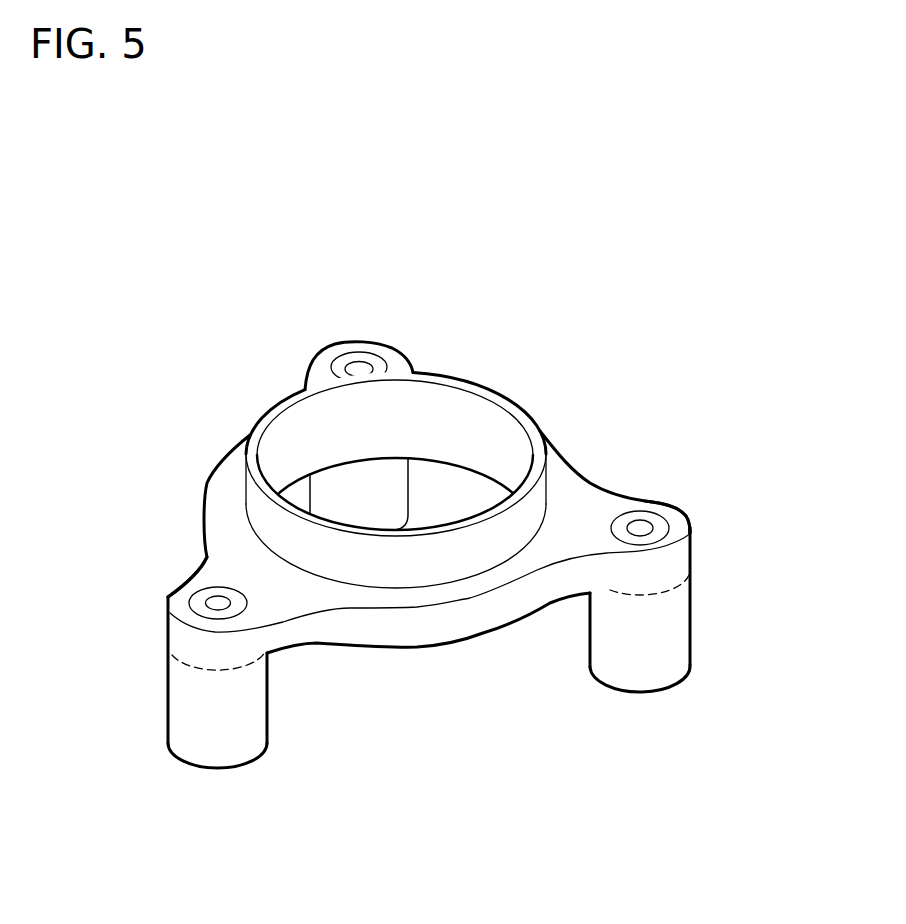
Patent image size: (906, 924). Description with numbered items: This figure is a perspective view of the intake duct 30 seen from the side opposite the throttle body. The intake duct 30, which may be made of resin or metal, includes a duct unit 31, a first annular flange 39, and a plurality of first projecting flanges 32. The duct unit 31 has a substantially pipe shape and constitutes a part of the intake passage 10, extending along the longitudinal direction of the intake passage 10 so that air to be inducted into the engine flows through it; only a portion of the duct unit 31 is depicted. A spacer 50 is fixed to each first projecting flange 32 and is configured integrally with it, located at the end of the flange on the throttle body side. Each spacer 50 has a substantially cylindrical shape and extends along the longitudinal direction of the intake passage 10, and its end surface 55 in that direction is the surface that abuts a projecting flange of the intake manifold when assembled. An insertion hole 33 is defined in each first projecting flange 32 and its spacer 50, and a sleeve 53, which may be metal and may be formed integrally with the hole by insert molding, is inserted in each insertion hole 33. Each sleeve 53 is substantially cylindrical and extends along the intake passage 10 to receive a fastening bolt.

The intake passage 10 is at (477, 413).
The intake duct 30 is at (549, 356).
The duct unit 31 is at (480, 618).
The first projecting flange 32 is at (323, 370).
The insertion hole 33 is at (343, 358).
The first annular flange 39 is at (570, 480).
The spacer 50 is at (677, 622).
The sleeve 53 is at (365, 358).
The end surface 55 is at (677, 687).